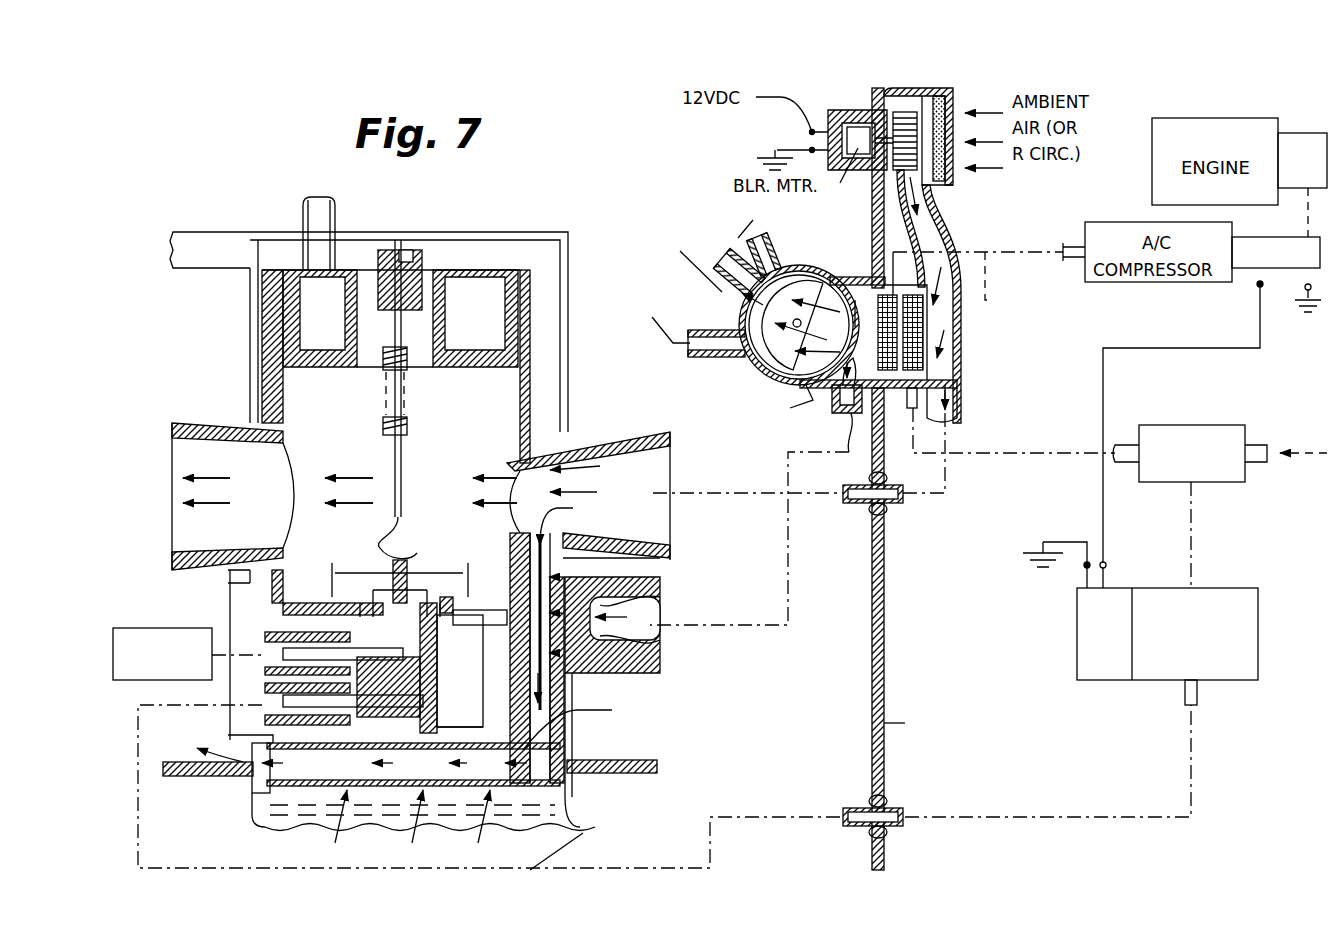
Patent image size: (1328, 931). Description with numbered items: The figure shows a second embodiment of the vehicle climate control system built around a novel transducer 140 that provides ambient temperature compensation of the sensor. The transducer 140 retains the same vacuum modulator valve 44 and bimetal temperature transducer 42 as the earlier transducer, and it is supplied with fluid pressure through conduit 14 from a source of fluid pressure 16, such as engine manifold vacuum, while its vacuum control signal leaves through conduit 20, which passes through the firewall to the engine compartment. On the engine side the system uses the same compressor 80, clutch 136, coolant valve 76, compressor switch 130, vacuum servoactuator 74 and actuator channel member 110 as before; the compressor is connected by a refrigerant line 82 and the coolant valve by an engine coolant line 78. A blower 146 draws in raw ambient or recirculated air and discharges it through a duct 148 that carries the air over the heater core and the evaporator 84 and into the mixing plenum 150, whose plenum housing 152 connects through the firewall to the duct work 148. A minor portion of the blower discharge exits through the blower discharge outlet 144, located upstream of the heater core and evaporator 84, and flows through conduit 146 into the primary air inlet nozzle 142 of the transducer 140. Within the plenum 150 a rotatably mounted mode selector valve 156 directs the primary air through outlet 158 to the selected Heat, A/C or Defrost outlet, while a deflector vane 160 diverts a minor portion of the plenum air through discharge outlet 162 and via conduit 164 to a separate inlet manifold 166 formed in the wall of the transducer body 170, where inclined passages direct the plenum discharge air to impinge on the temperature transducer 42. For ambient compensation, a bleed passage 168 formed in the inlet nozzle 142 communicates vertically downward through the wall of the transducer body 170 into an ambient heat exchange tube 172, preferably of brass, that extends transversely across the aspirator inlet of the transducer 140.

The transducer 140 is at (257, 225).
The temperature transducer 42 is at (357, 563).
The vacuum modulator valve 44 is at (431, 588).
The bleed passage 168 is at (537, 548).
The source of fluid pressure 16 is at (152, 628).
The conduit 14 is at (280, 668).
The conduit 20 is at (258, 712).
The transducer body 170 is at (510, 675).
The ambient heat exchange tube 172 is at (452, 744).
The inlet nozzle 142 is at (670, 546).
The inlet manifold 166 is at (640, 612).
The conduit 146 is at (873, 95).
The conduit 164 is at (790, 562).
The discharge outlet 162 is at (830, 448).
The deflector vane 160 is at (838, 412).
The mode selector valve 156 is at (750, 366).
The plenum housing 152 is at (780, 381).
The outlet 158 is at (738, 311).
The mixing plenum 150 is at (855, 327).
The evaporator 84 is at (858, 327).
The duct 148 is at (944, 216).
The compressor 80 is at (927, 366).
The blower discharge outlet 144 is at (958, 403).
The refrigerant line 82 is at (1060, 252).
The clutch 136 is at (1285, 237).
The engine coolant line 78 is at (1120, 460).
The actuator channel member 110 is at (1195, 540).
The coolant valve 76 is at (1253, 486).
The compressor switch 130 is at (1077, 650).
The vacuum servoactuator 74 is at (1260, 684).